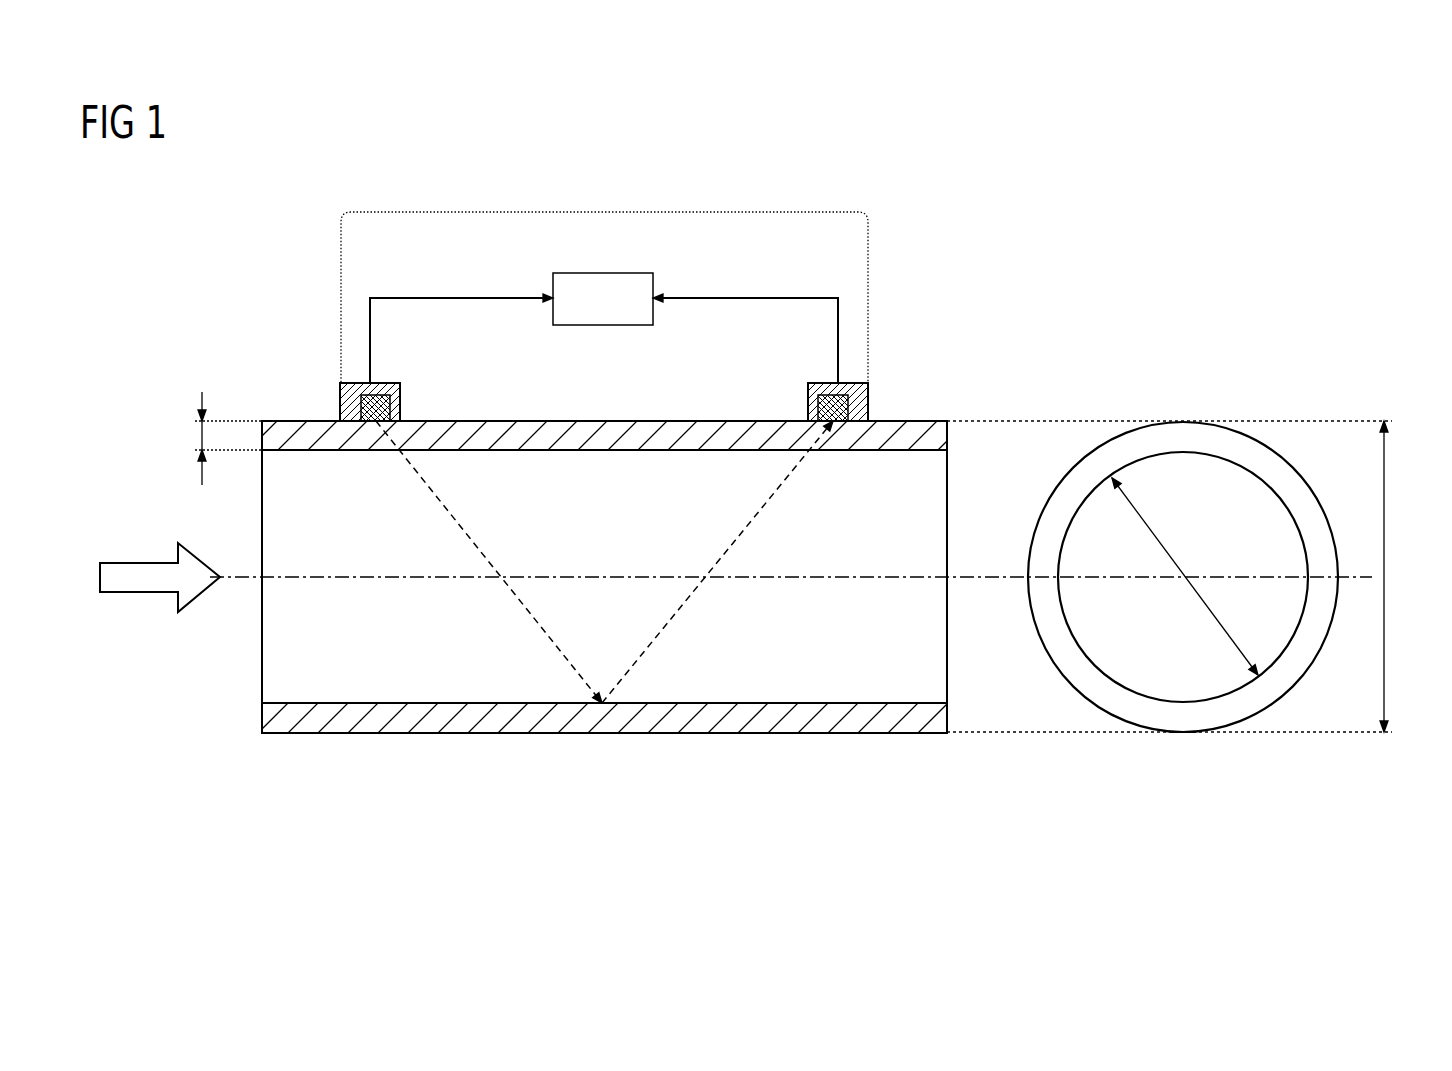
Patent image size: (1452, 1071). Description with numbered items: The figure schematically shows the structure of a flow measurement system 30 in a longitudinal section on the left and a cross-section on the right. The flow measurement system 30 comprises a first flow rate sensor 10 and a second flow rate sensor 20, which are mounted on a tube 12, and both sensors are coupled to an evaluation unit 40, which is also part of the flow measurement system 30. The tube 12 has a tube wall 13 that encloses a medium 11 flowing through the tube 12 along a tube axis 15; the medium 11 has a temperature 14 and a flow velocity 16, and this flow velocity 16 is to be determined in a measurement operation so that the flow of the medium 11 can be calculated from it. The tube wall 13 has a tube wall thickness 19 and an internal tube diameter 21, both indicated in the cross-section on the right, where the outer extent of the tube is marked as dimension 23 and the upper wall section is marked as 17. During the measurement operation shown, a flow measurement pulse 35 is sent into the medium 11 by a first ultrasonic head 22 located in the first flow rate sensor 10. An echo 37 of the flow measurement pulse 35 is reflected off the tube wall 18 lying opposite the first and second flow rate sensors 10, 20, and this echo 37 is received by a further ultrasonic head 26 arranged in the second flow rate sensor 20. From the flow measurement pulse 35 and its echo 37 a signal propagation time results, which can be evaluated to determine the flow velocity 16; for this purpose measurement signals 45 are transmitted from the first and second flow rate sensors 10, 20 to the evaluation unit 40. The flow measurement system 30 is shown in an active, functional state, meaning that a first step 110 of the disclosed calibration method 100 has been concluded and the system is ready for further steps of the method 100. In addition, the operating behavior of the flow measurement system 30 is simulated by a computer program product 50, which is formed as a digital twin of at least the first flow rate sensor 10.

The computer program product 50 is at (768, 488).
The method 100 is at (768, 488).
The first step 110 is at (237, 258).
The first flow rate sensor 10 is at (338, 402).
The first ultrasonic head 22 is at (400, 403).
The second flow rate sensor 20 is at (870, 405).
The further ultrasonic head 26 is at (808, 405).
The flow measurement system 30 is at (600, 212).
The evaluation unit 40 is at (603, 325).
The measurement signals 45 is at (487, 297).
The tube 12 is at (893, 733).
The tube wall 13 is at (828, 718).
The upper tube wall section 17 is at (876, 455).
The tube wall 18 is at (318, 717).
The tube wall thickness 19 is at (200, 437).
The tube axis 15 is at (237, 580).
The medium 11 is at (152, 553).
The temperature 14 is at (152, 553).
The flow velocity 16 is at (128, 560).
The flow measurement pulse 35 is at (480, 548).
The echo 37 is at (740, 537).
The internal tube diameter 21 is at (1161, 543).
The outer diameter 23 is at (1384, 527).